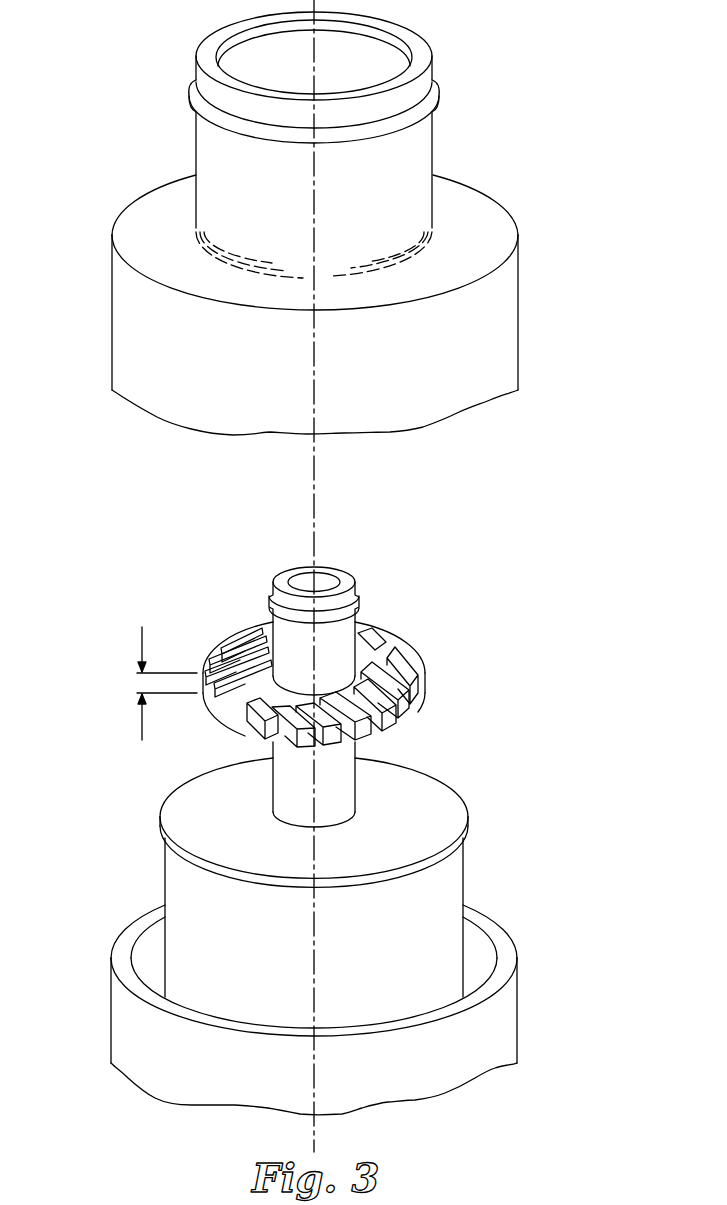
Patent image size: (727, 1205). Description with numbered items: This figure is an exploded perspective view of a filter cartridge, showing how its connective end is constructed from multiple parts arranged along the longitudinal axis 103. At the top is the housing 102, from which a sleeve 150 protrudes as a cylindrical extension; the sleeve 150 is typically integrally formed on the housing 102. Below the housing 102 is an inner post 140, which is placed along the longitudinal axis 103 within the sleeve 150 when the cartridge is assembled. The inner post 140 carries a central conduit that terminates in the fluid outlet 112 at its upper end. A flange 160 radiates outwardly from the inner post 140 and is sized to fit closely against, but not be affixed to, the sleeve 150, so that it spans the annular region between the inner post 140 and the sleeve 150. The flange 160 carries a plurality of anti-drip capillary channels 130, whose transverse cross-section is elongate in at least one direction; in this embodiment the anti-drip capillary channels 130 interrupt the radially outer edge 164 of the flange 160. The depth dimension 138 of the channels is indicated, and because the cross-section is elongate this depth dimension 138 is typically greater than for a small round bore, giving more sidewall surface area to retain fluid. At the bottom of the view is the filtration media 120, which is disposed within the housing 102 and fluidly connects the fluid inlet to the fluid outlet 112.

The housing 102 is at (508, 317).
The longitudinal axis 103 is at (318, 483).
The fluid outlet 112 is at (300, 580).
The filtration media 120 is at (175, 882).
The anti-drip capillary channels 130 is at (240, 645).
The depth dimension 138 is at (140, 639).
The inner post 140 is at (348, 637).
The sleeve 150 is at (423, 137).
The flange 160 is at (225, 717).
The radially outer edge 164 is at (405, 720).